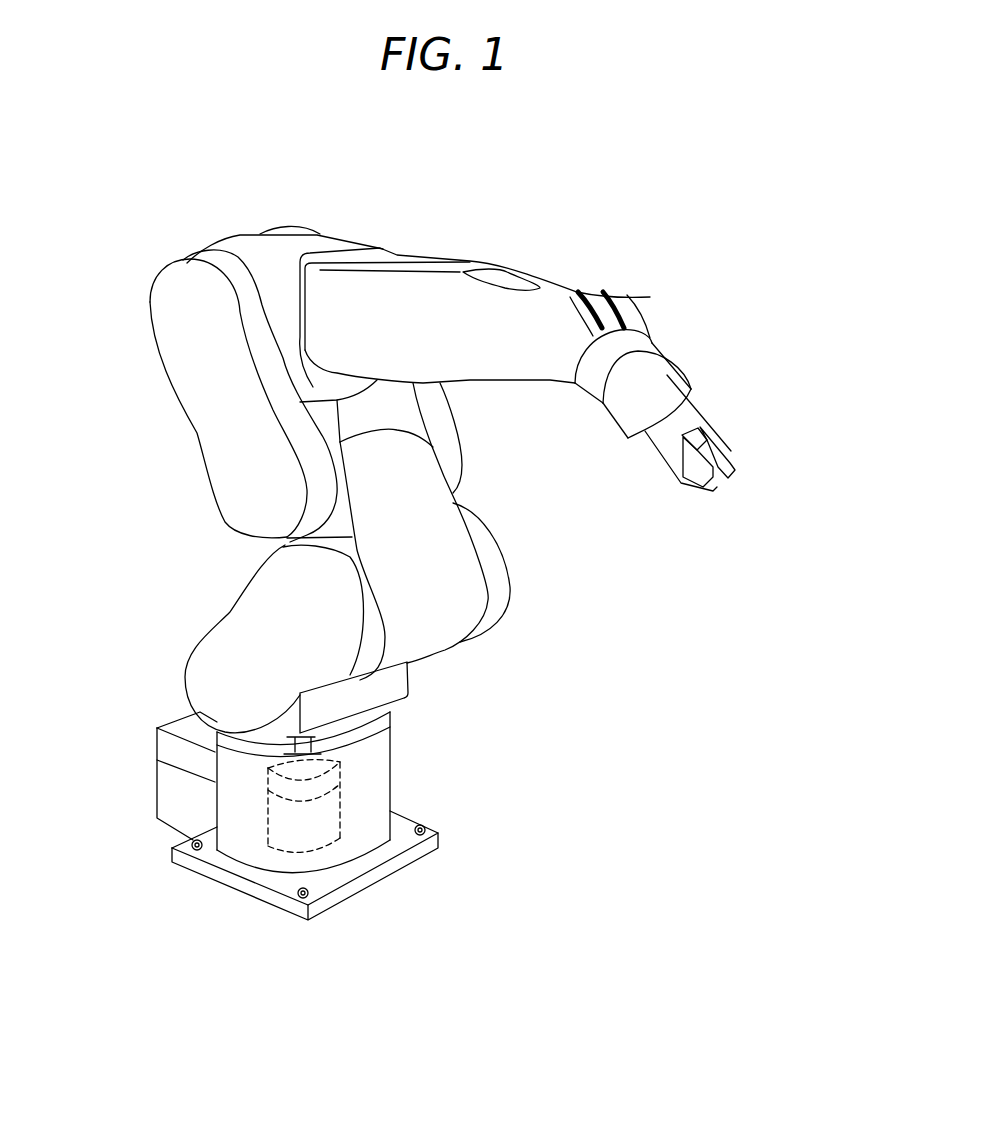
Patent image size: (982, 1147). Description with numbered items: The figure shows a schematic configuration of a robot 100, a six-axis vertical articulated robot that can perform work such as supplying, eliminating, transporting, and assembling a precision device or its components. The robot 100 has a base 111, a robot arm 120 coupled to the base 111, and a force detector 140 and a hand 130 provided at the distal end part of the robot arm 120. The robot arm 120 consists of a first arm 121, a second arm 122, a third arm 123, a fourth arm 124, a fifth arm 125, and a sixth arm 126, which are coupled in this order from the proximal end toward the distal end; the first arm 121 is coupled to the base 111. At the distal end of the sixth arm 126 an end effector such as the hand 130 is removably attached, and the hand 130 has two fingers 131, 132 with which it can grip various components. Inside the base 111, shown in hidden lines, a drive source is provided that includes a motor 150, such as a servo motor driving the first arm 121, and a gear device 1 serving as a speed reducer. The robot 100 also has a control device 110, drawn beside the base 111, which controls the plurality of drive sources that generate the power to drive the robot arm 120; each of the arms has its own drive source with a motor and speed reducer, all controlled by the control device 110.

The robot 100 is at (529, 222).
The control device 110 is at (168, 788).
The base 111 is at (330, 862).
The robot arm 120 is at (430, 247).
The first arm 121 is at (217, 672).
The second arm 122 is at (217, 415).
The third arm 123 is at (255, 252).
The fourth arm 124 is at (297, 303).
The fifth arm 125 is at (605, 299).
The sixth arm 126 is at (628, 343).
The hand 130 is at (706, 418).
The finger 131 is at (735, 471).
The finger 132 is at (702, 484).
The force detector 140 is at (652, 367).
The motor 150 is at (342, 815).
The gear device 1 is at (342, 781).